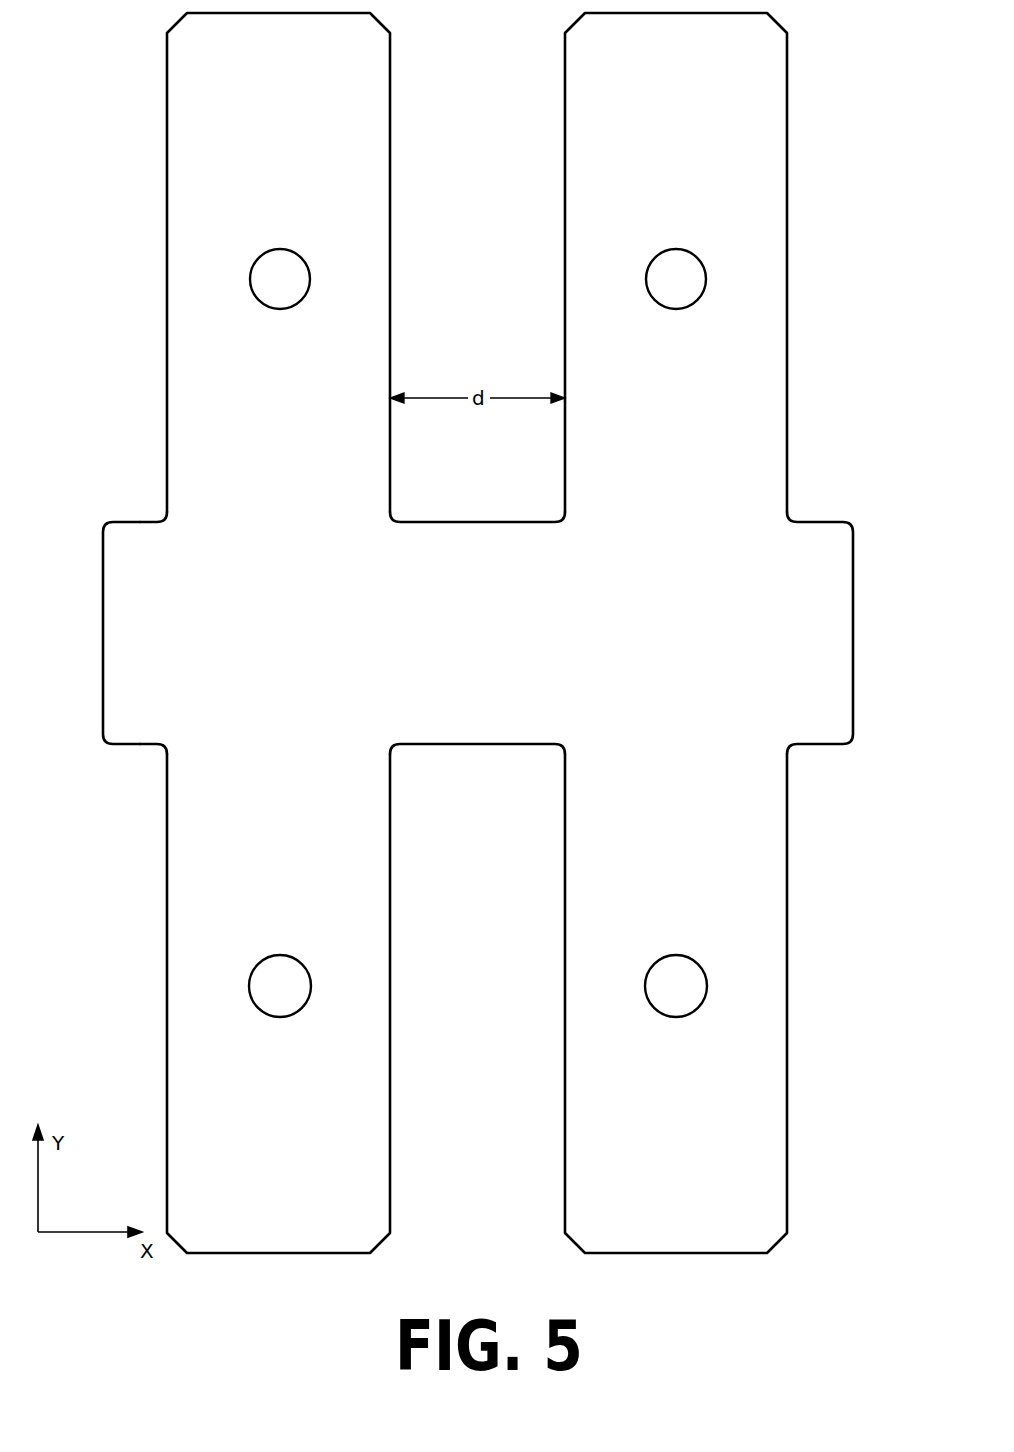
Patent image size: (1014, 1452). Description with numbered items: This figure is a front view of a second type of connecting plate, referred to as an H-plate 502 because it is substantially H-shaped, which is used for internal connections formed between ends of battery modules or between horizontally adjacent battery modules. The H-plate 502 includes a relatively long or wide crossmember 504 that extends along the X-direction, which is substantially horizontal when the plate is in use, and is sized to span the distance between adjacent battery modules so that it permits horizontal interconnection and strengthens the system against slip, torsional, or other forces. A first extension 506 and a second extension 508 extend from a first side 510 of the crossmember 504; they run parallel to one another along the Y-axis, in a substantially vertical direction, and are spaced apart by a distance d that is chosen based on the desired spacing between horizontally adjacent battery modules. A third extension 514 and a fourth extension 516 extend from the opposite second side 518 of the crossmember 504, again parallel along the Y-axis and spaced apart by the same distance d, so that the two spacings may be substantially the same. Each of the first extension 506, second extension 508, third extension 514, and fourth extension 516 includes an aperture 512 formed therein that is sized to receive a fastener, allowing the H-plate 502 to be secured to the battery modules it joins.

The H-plate 502 is at (471, 626).
The crossmember 504 is at (103, 598).
The first extension 506 is at (787, 183).
The second extension 508 is at (390, 183).
The first side 510 is at (138, 510).
The aperture 512 is at (282, 249).
The third extension 514 is at (787, 982).
The fourth extension 516 is at (390, 982).
The second side 518 is at (138, 758).